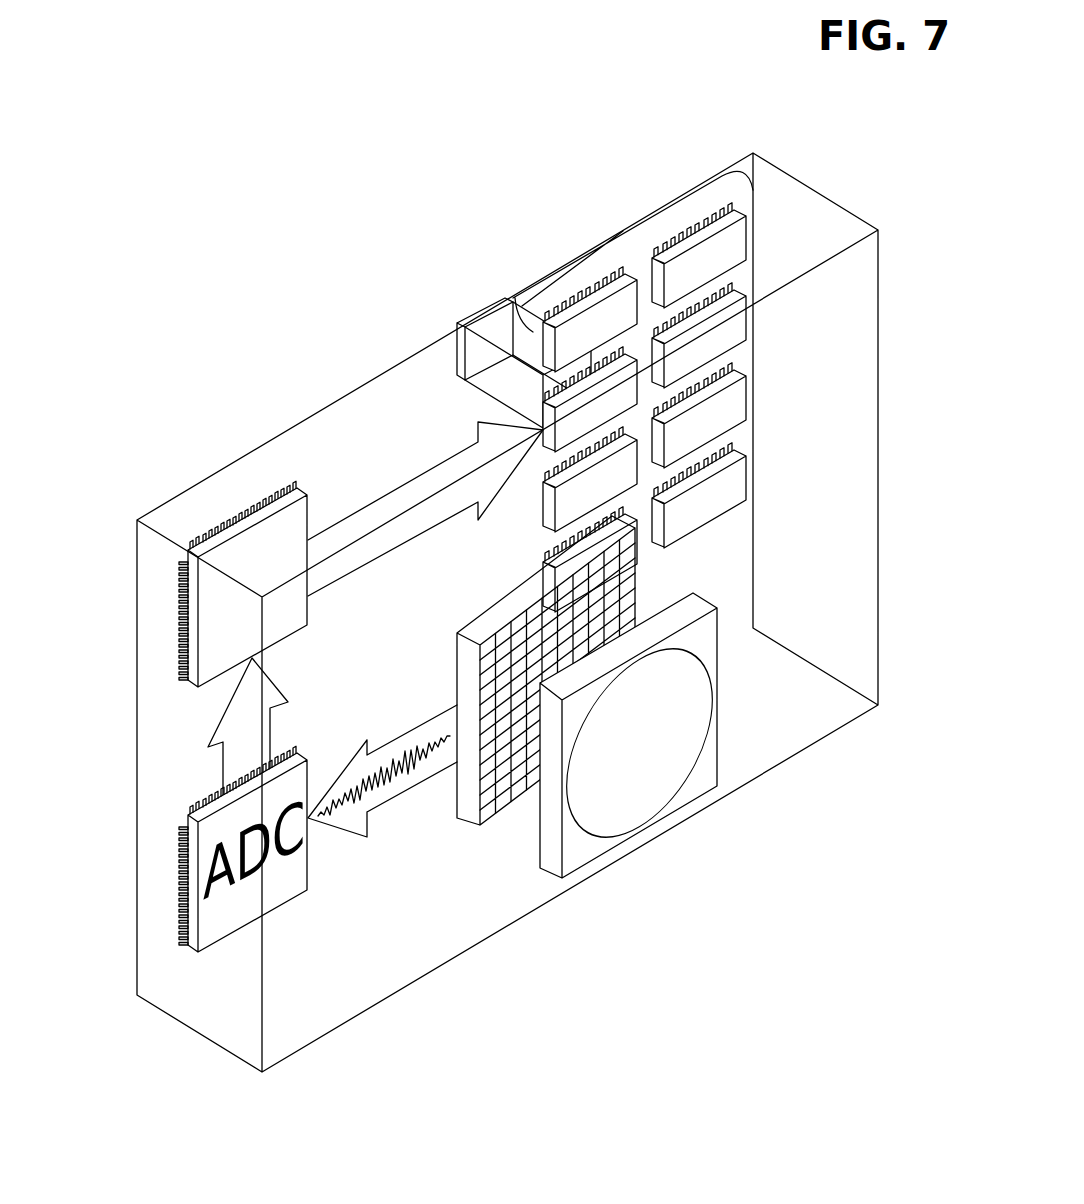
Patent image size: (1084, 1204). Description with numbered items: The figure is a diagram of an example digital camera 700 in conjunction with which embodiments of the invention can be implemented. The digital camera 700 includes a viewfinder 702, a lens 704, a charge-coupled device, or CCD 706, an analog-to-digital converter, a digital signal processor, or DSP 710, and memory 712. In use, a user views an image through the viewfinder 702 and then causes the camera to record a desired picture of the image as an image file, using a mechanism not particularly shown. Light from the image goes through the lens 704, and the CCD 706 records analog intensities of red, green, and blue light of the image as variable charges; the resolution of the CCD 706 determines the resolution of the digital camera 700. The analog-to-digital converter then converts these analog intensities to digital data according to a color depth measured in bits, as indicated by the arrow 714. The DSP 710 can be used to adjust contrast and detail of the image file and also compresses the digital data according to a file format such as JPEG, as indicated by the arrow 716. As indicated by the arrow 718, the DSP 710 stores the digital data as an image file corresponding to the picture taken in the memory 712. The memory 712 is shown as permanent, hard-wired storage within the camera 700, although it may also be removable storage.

The digital camera 700 is at (879, 462).
The viewfinder 702 is at (481, 306).
The lens 704 is at (673, 762).
The charge-coupled device (CCD) 706 is at (480, 830).
The digital signal processor (DSP) 710 is at (179, 634).
The memory 712 is at (624, 229).
The arrow 714 is at (420, 724).
The arrow 716 is at (208, 746).
The arrow 718 is at (384, 496).